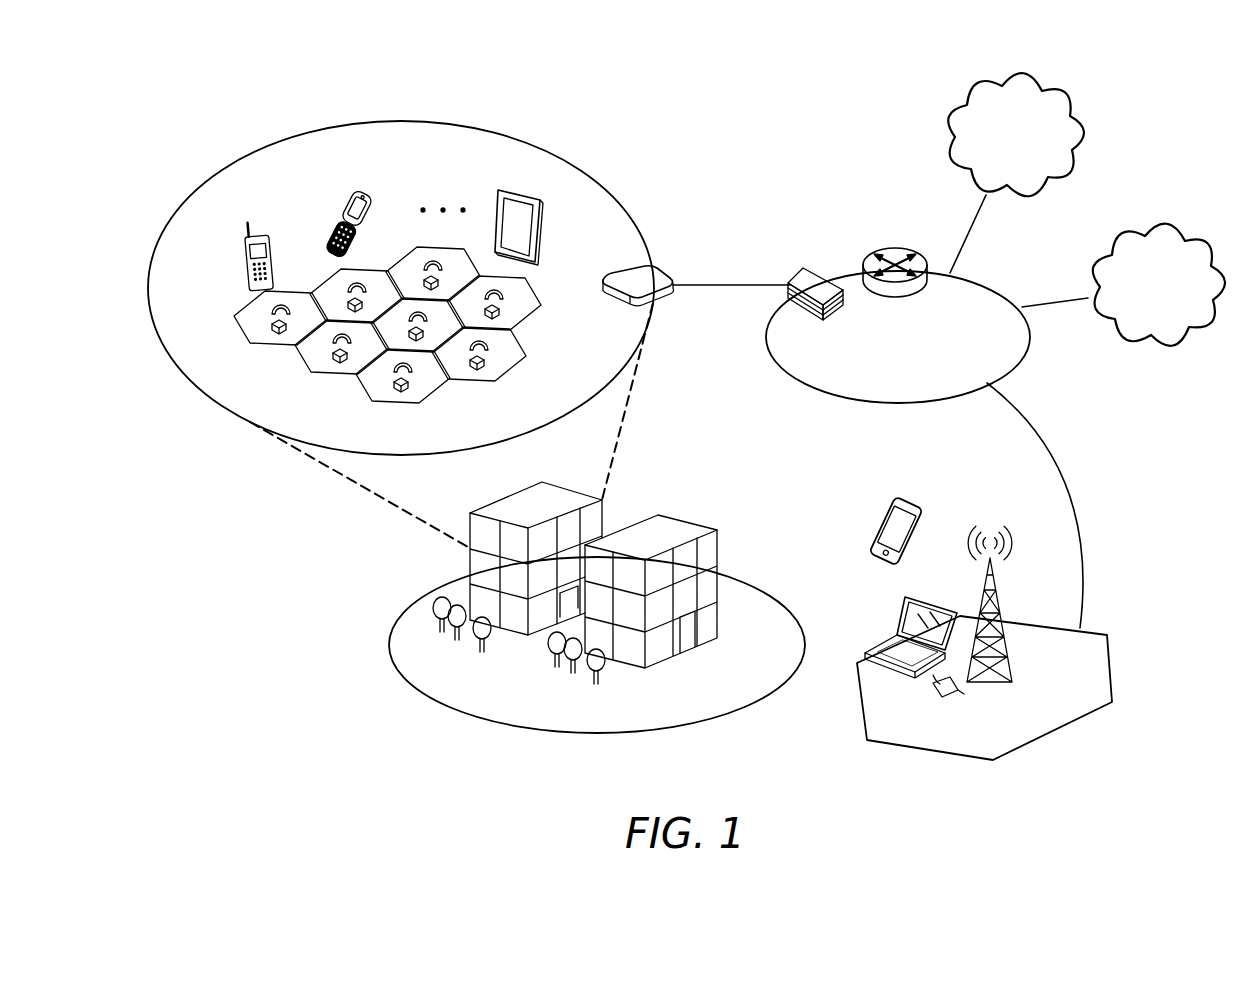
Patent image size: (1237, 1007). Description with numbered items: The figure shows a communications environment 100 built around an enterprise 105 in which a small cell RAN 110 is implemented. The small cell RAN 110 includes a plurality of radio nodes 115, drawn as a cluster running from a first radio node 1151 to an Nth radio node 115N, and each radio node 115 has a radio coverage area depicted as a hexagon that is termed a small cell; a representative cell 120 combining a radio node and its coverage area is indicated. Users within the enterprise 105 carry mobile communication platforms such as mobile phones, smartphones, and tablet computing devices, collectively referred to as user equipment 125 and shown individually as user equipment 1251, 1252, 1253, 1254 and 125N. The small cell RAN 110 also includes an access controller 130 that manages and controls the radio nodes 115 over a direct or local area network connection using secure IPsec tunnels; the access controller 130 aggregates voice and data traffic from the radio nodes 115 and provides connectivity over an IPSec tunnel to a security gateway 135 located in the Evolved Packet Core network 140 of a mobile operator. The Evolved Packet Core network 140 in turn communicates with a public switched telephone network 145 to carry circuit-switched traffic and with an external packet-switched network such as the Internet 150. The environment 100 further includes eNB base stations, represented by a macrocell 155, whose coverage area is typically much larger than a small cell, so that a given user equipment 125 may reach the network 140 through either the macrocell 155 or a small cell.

The environment 100 is at (133, 131).
The enterprise 105 is at (389, 638).
The small cell RAN 110 is at (467, 127).
The radio node 115 is at (542, 385).
The radio node 115N is at (505, 312).
The radio node 1151 is at (490, 362).
The cell 120 is at (533, 293).
The user equipment 125 is at (573, 411).
The user equipment 1251 is at (878, 514).
The user equipment 1252 is at (903, 618).
The user equipment 1253 is at (244, 257).
The user equipment 1254 is at (347, 201).
The user equipment 125N is at (521, 190).
The access controller 130 is at (660, 268).
The security gateway 135 is at (806, 268).
The Evolved Packet Core network 140 is at (892, 392).
The public switched telephone network 145 is at (1185, 226).
The Internet 150 is at (1039, 76).
The macrocell 155 is at (1053, 621).